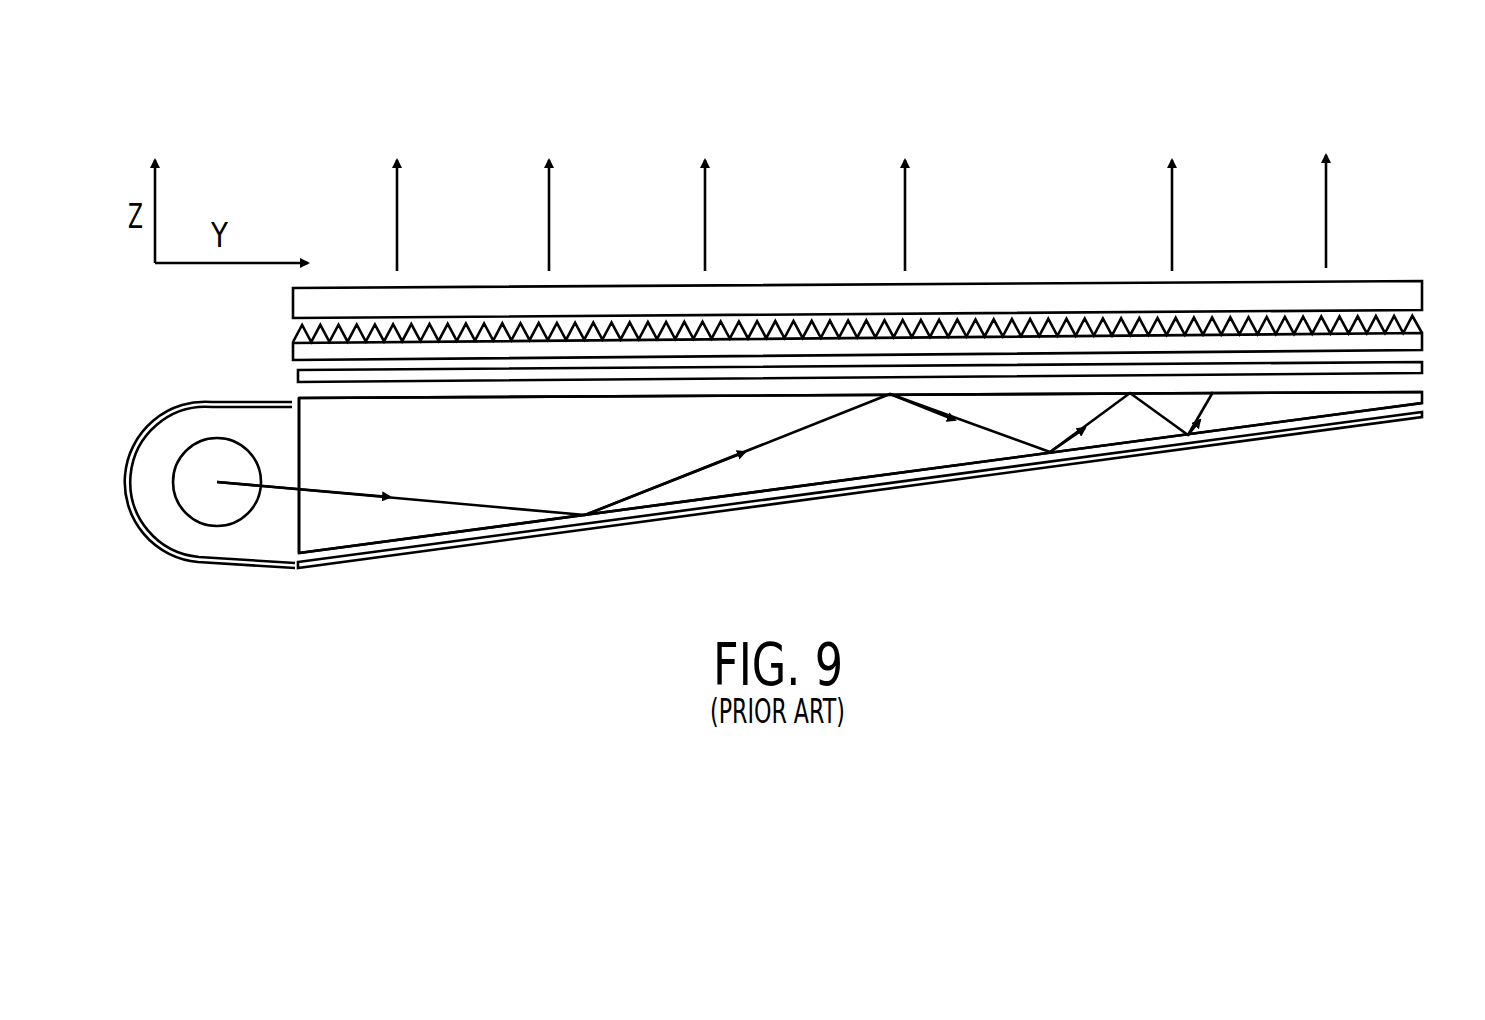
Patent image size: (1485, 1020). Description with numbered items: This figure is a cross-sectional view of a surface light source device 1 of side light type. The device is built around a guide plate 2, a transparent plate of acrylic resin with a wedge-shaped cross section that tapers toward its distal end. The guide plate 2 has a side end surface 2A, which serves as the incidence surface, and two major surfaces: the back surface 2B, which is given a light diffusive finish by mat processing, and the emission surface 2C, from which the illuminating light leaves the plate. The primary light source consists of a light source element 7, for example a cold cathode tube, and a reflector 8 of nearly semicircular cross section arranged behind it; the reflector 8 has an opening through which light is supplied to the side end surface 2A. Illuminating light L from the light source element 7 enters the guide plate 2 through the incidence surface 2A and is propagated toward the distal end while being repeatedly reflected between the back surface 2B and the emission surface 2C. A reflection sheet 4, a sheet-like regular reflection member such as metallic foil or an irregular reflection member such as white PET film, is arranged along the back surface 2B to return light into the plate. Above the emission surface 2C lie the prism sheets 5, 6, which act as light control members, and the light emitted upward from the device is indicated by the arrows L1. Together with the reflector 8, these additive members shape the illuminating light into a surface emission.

The surface light source device 1 is at (999, 103).
The guide plate 2 is at (849, 466).
The side end surface 2A is at (300, 477).
The back surface 2B is at (645, 512).
The emission surface 2C is at (700, 398).
The reflection sheet 4 is at (1000, 475).
The prism sheet 5 is at (1418, 342).
The prism sheet 6 is at (1417, 296).
The light source element 7 is at (233, 515).
The reflector 8 is at (150, 540).
The illuminating light L is at (470, 507).
The emitted light L1 is at (1326, 240).